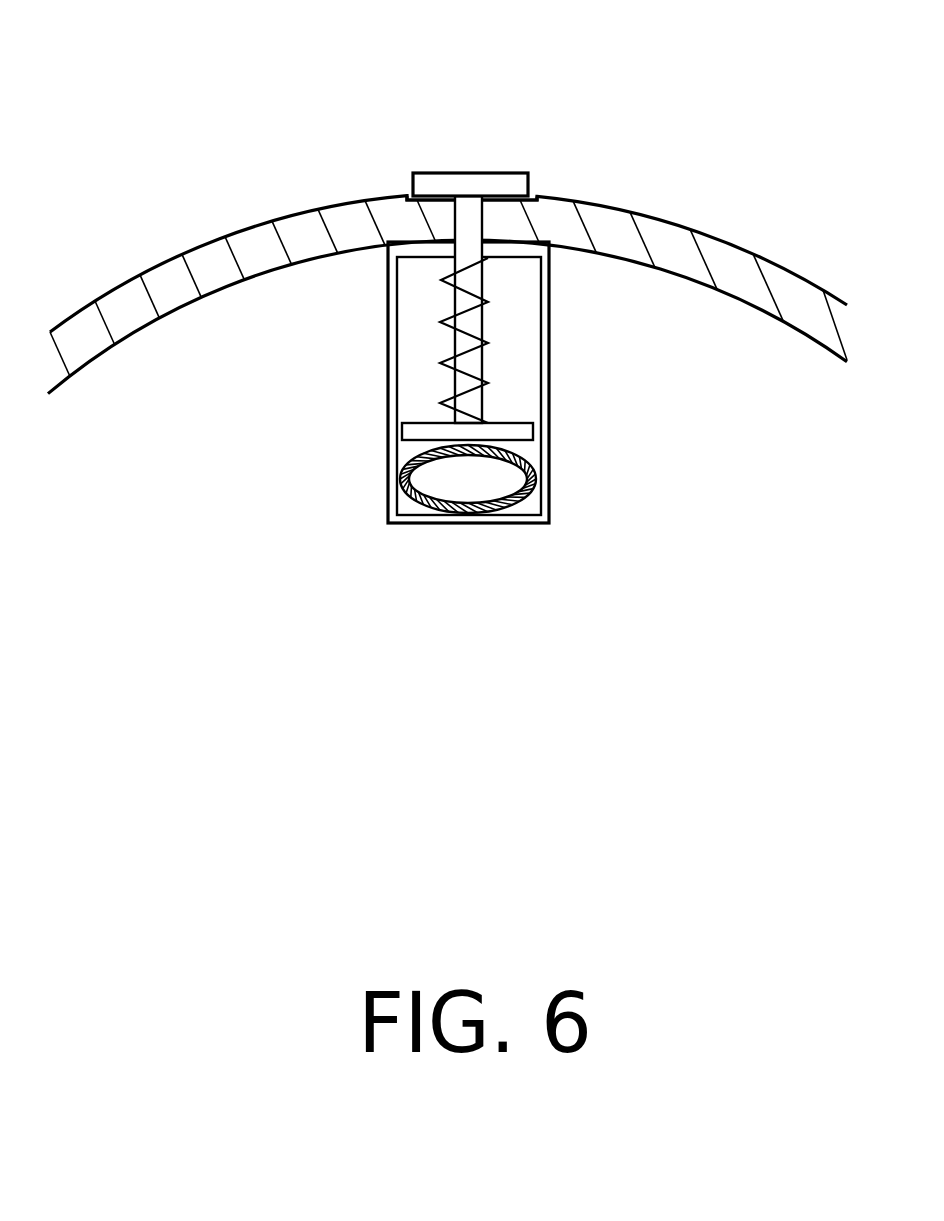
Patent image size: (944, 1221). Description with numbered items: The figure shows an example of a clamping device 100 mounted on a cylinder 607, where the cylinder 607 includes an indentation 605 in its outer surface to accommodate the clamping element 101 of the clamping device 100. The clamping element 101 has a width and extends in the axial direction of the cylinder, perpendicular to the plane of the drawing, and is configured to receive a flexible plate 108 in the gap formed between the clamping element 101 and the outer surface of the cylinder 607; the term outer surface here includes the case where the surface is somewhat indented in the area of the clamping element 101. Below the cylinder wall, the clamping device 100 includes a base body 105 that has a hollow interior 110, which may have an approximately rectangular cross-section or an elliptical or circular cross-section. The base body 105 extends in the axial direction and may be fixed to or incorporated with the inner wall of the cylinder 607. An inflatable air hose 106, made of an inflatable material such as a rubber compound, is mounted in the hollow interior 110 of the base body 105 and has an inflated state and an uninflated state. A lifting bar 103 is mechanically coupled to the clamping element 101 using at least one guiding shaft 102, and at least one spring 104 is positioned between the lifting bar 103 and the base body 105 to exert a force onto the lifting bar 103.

The clamping device 100 is at (396, 636).
The clamping element 101 is at (473, 173).
The guiding shaft 102 is at (467, 227).
The lifting bar 103 is at (423, 433).
The spring 104 is at (500, 302).
The base body 105 is at (519, 524).
The inflatable air hose 106 is at (405, 495).
The plate 108 is at (722, 232).
The hollow interior 110 is at (420, 320).
The indentation 605 is at (532, 193).
The cylinder 607 is at (243, 252).